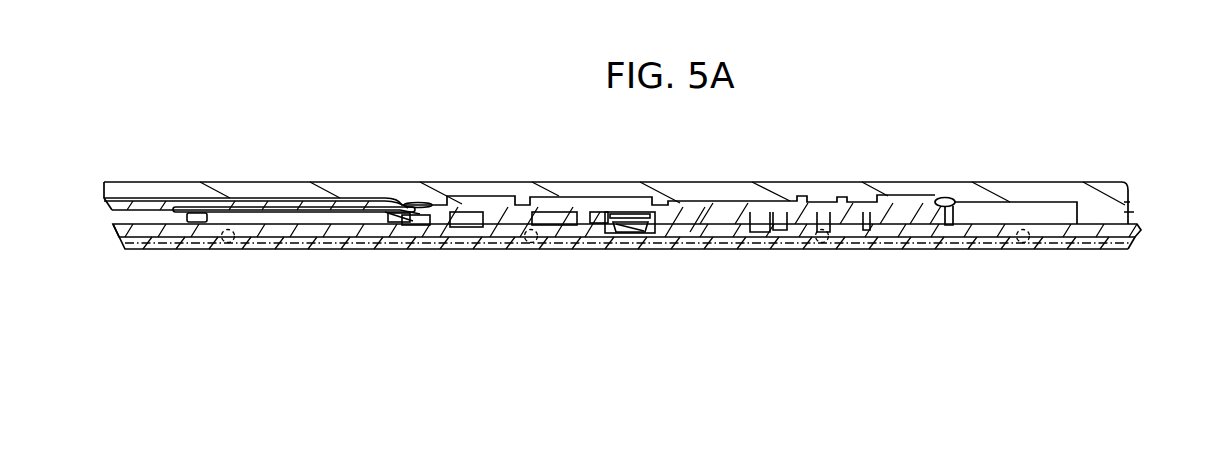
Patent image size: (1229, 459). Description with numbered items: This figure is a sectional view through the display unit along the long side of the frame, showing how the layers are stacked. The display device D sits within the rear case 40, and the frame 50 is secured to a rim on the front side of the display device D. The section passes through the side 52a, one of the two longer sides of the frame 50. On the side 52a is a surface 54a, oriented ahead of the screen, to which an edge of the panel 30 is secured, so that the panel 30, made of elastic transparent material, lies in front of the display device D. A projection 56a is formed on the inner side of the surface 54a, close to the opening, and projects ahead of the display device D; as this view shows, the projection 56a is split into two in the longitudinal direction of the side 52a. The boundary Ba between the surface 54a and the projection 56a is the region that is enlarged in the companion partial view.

The rear case 40 is at (1005, 182).
The display device D is at (702, 217).
The frame 50 is at (1160, 235).
The side 52a is at (1132, 241).
The panel 30 is at (1105, 250).
The projection 56a is at (384, 230).
The surface 54a is at (714, 232).
The boundary Ba is at (229, 243).